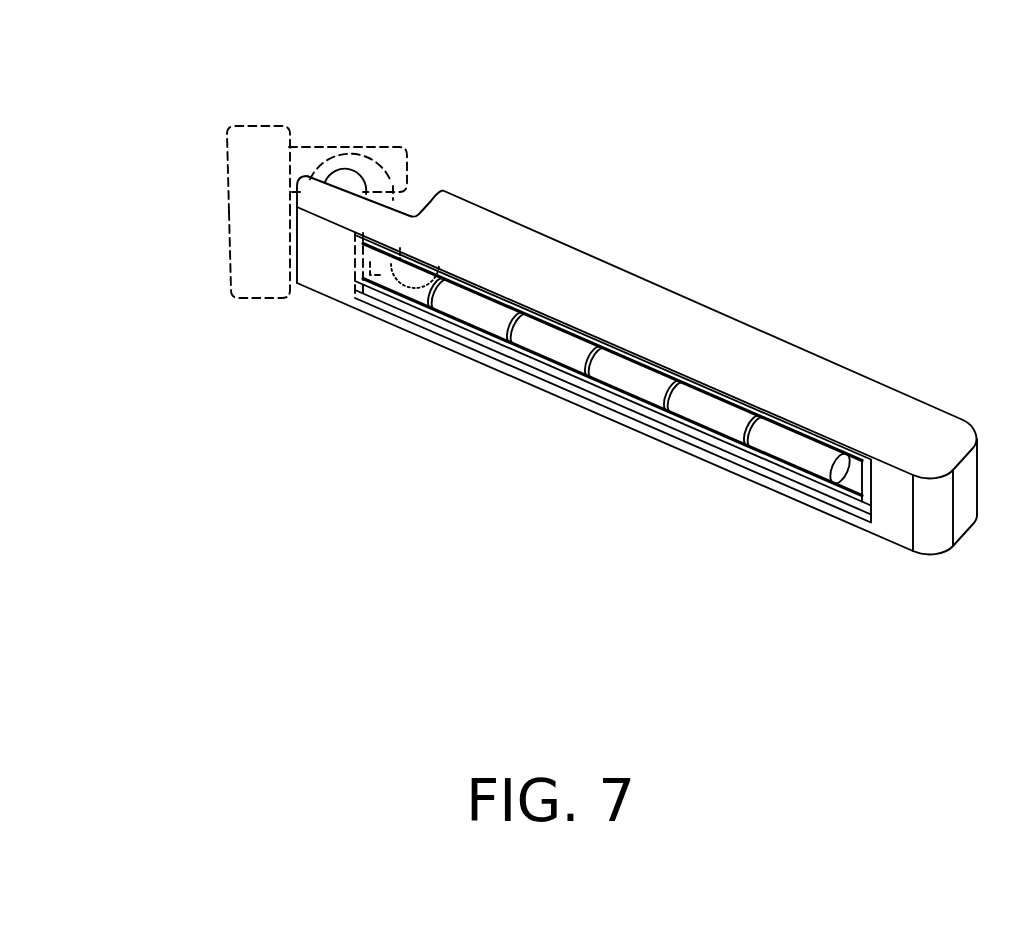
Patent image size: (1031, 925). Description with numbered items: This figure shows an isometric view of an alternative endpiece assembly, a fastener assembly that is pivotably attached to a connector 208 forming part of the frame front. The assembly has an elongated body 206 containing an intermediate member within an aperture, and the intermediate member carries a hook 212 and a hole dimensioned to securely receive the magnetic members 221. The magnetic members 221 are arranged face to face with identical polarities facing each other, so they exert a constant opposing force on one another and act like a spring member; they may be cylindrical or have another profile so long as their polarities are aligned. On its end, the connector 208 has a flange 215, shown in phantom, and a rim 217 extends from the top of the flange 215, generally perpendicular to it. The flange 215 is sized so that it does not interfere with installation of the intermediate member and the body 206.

The body 206 is at (893, 436).
The connector 208 is at (248, 160).
The hook 212 is at (364, 163).
The flange 215 is at (247, 220).
The rim 217 is at (323, 146).
The magnetic members 221 is at (746, 431).